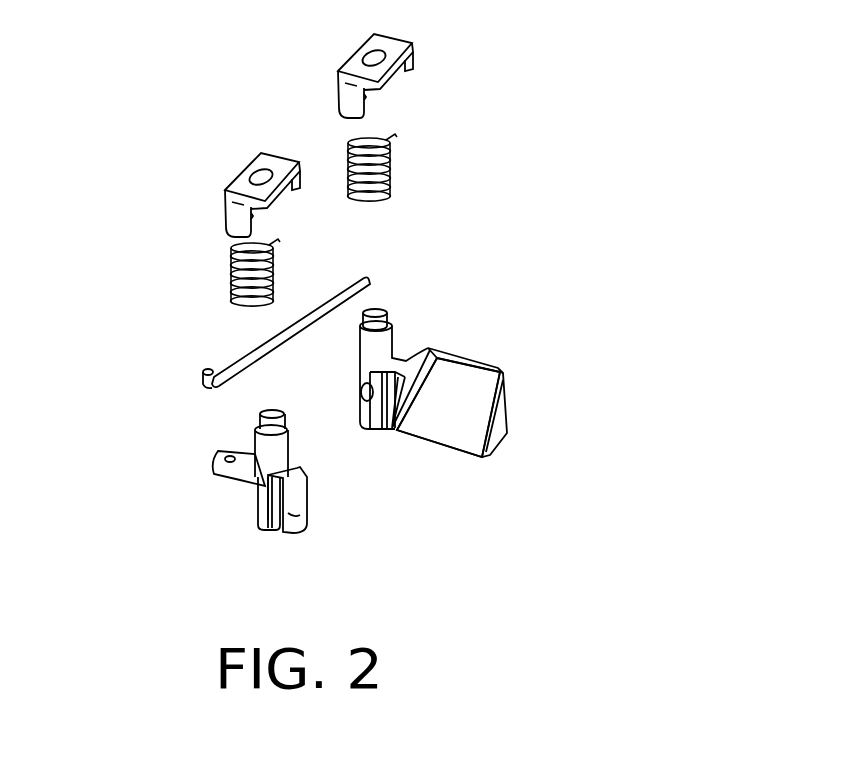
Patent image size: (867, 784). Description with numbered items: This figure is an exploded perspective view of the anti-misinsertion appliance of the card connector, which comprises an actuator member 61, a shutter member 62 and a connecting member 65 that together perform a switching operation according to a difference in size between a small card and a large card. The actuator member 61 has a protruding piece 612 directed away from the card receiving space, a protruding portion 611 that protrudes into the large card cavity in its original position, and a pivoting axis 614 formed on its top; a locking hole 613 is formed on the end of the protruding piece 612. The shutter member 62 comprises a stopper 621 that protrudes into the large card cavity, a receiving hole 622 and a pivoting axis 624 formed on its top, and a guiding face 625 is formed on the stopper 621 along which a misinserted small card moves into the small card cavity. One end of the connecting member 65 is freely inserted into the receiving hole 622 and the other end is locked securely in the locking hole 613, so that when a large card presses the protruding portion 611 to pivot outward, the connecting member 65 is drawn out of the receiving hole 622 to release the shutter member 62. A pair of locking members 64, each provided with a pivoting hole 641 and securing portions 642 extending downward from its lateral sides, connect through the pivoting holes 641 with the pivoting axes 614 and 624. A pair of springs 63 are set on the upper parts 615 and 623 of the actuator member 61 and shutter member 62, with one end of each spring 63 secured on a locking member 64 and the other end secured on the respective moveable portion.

The actuator member 61 is at (247, 490).
The protruding portion 611 is at (300, 518).
The protruding piece 612 is at (235, 478).
The locking hole 613 is at (223, 458).
The pivoting axis 614 is at (258, 423).
The upper part 615 is at (280, 455).
The shutter member 62 is at (495, 379).
The stopper 621 is at (487, 370).
The receiving hole 622 is at (366, 425).
The upper part 623 is at (380, 345).
The pivoting axis 624 is at (383, 310).
The guiding face 625 is at (468, 440).
The spring 63 is at (233, 292).
The locking member 64 is at (358, 50).
The pivoting hole 641 is at (262, 172).
The securing portion 642 is at (225, 225).
The connecting member 65 is at (217, 370).